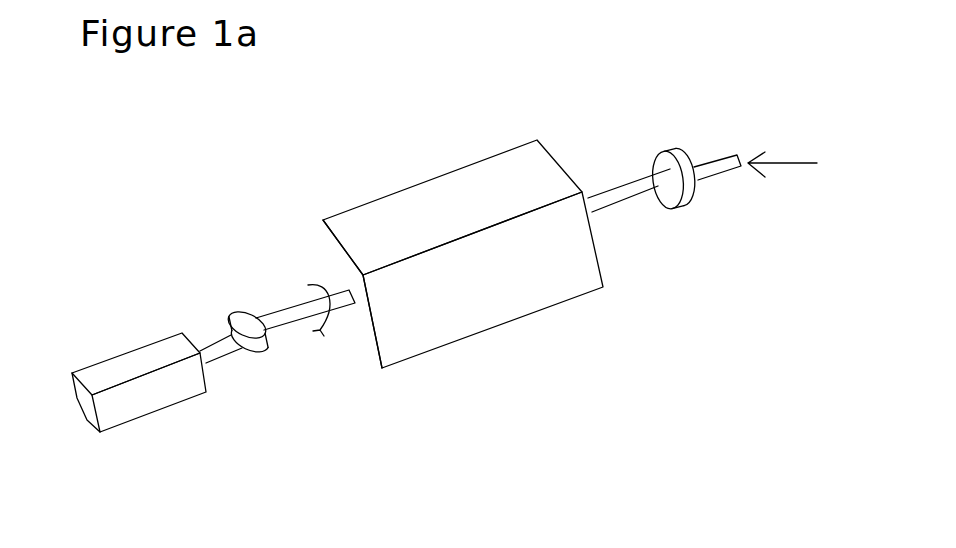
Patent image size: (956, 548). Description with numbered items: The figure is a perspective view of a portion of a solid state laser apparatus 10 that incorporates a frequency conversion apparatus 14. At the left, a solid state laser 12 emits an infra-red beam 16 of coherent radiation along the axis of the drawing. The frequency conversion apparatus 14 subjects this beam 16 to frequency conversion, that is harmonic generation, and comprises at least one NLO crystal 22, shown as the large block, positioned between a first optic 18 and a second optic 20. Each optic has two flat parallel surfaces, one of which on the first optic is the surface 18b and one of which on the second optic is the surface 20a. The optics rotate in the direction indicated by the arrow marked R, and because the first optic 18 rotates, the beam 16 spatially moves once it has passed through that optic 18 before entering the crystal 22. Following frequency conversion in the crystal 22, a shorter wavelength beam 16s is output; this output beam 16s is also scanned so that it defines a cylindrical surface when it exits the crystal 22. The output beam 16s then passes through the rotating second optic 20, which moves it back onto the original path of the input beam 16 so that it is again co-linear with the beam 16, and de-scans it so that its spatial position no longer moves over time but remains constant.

The solid state laser apparatus 10 is at (390, 84).
The solid state laser 12 is at (100, 333).
The frequency conversion apparatus 14 is at (341, 444).
The infra-red beam 16 is at (243, 373).
The shorter wavelength beam 16s is at (620, 187).
The first optic 18 is at (255, 293).
The flat parallel surface 18b is at (283, 340).
The second optic 20 is at (692, 125).
The flat parallel surface 20a is at (663, 208).
The NLO crystal 22 is at (513, 348).